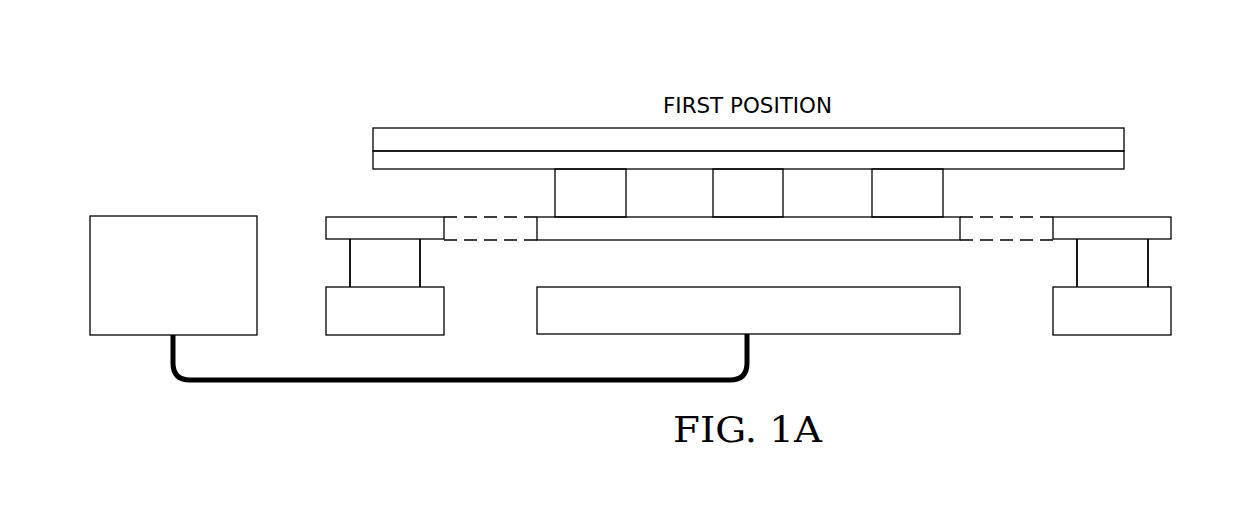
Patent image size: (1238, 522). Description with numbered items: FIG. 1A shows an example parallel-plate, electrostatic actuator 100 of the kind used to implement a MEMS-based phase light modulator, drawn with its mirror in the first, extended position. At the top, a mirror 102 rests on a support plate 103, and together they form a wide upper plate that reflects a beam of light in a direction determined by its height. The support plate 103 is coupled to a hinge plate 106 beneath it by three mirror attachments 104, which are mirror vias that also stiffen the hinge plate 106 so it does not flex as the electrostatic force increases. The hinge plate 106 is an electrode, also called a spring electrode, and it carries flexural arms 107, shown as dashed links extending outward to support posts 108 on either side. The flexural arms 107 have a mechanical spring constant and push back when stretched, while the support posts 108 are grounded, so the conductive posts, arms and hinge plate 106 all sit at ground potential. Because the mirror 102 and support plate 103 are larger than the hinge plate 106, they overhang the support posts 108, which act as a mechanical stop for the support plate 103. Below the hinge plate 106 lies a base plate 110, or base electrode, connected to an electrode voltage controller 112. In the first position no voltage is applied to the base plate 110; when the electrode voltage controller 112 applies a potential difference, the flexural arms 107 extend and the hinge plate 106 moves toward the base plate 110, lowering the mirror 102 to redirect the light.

The parallel-plate electrostatic actuator 100 is at (200, 62).
The mirror 102 is at (378, 137).
The support plate 103 is at (1115, 157).
The mirror attachments 104 is at (580, 180).
The hinge plate 106 is at (748, 232).
The flexural arms 107 is at (497, 242).
The support posts 108 is at (358, 263).
The base plate 110 is at (785, 325).
The electrode voltage controller 112 is at (90, 275).